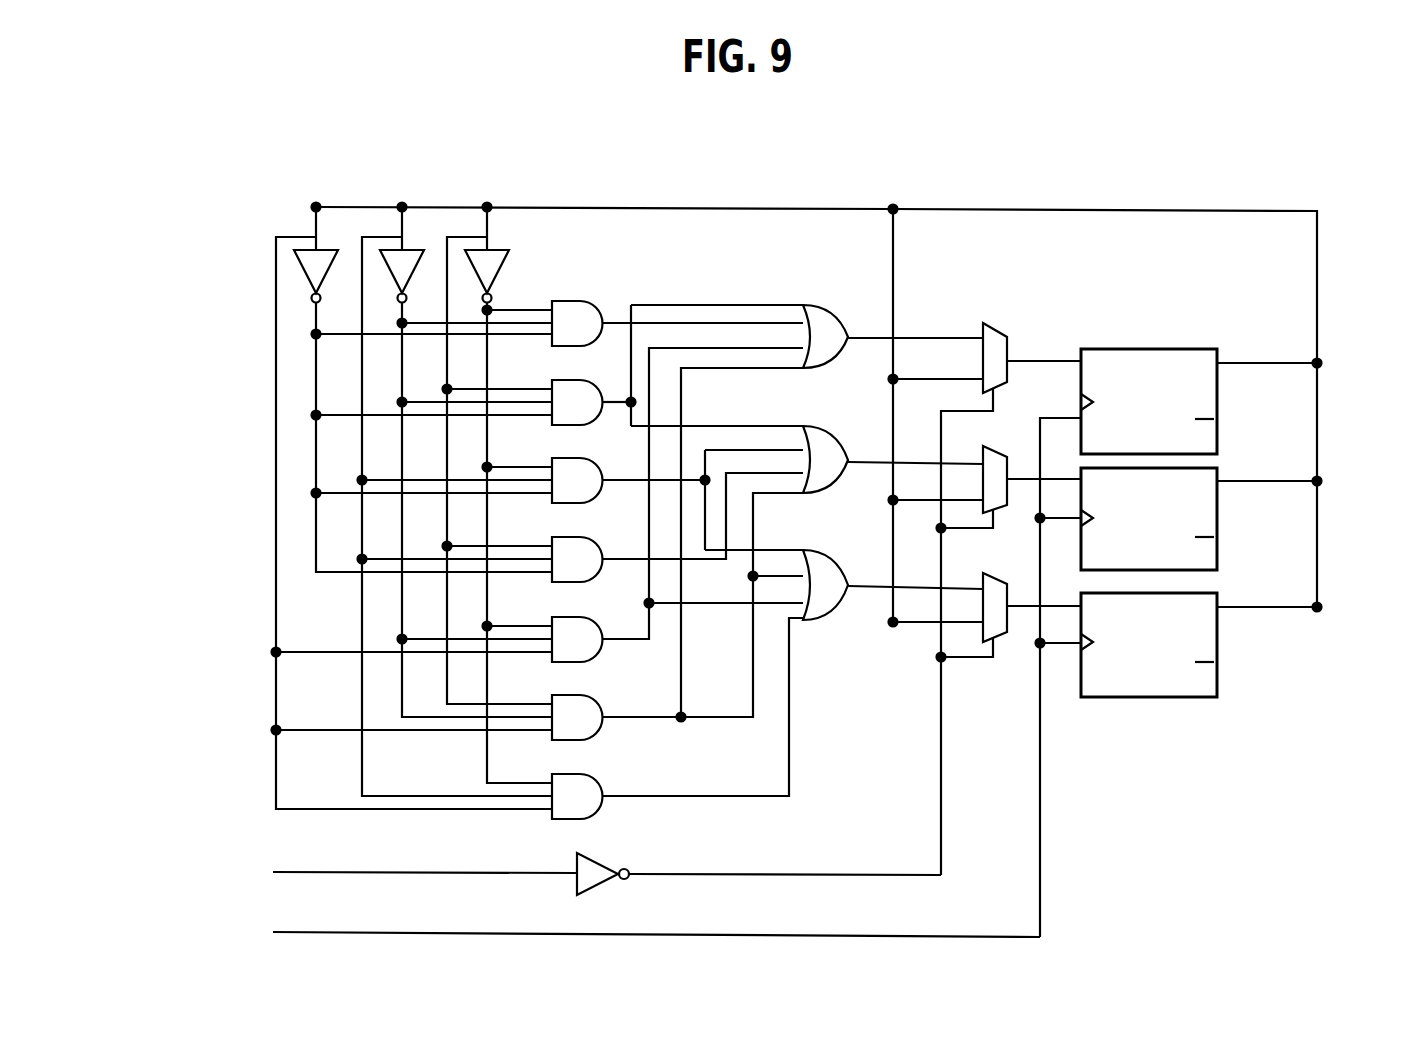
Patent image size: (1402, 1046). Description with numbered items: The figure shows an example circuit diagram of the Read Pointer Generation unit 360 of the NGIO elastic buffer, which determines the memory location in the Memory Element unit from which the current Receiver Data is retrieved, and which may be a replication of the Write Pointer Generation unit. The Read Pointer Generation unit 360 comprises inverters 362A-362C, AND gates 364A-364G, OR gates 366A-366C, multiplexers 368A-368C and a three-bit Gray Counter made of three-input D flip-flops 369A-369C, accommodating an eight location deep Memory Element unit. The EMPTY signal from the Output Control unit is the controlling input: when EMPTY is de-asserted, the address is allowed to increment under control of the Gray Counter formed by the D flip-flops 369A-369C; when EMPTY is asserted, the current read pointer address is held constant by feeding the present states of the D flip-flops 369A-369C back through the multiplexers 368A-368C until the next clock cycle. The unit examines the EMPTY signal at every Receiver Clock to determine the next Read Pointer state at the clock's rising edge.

The Read Pointer Generation unit 360 is at (1049, 180).
The inverters 362A-362C is at (263, 263).
The AND gates 364A-364G is at (603, 298).
The OR gates 366A-366C is at (827, 623).
The multiplexers 368A-368C is at (994, 330).
The 3-input D flip-flops 369A-369C is at (1125, 705).